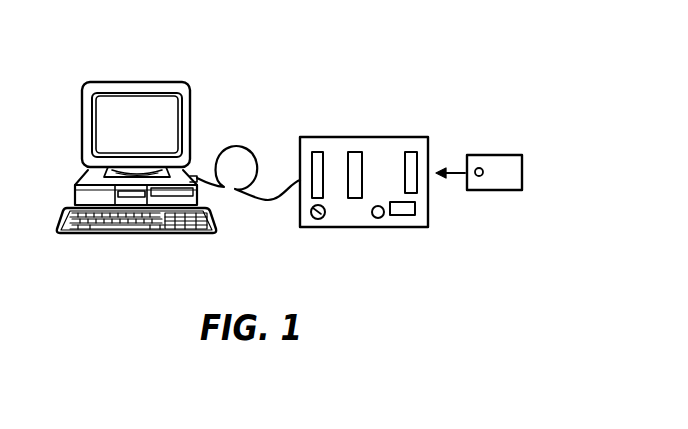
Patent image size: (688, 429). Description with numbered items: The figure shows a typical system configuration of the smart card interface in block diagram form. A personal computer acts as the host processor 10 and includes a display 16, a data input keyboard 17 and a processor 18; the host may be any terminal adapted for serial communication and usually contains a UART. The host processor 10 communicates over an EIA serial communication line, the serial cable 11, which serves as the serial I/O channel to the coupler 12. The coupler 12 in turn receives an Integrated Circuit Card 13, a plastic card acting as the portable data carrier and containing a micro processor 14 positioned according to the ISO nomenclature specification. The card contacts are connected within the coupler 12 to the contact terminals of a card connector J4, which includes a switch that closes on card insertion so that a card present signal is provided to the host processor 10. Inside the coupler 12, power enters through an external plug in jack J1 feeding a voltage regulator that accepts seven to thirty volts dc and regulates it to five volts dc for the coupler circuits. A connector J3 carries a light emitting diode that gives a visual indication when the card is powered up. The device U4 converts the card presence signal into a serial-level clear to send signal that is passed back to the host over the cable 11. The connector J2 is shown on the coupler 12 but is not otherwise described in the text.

The host processor 10 is at (190, 78).
The RS 232 serial communication line 11 is at (270, 203).
The coupler 12 is at (402, 135).
The integrated circuit card 13 is at (505, 150).
The micro processor 14 is at (480, 168).
The display 16 is at (190, 130).
The data input keyboard 17 is at (176, 236).
The processor 18 is at (187, 168).
The external plug in jack J1 is at (328, 216).
The connector J2 is at (317, 152).
The connector J3 is at (417, 225).
The card connector J4 is at (415, 158).
The RS 232 level converter U4 is at (353, 152).